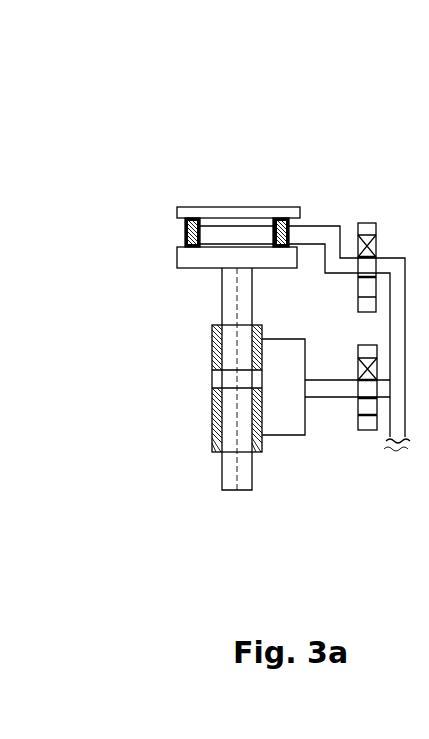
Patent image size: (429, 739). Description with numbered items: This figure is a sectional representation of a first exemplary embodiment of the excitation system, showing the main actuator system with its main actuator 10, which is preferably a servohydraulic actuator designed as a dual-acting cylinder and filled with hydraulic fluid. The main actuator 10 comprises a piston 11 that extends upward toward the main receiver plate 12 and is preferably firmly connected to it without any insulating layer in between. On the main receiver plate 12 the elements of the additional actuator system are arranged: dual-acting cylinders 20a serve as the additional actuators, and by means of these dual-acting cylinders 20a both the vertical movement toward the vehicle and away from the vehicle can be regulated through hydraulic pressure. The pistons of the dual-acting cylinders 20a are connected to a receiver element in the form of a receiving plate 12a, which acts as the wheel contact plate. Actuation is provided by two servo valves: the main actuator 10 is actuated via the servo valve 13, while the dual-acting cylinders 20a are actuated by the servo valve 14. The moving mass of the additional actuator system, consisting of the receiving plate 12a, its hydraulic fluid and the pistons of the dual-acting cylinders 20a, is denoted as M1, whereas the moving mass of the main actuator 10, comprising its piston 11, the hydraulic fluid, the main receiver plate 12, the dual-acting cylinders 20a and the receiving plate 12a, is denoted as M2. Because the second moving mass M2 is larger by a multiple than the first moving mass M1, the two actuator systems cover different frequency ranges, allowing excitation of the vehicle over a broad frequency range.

The main actuator 10 is at (251, 396).
The piston 11 is at (222, 307).
The main receiver plate 12 is at (255, 272).
The receiving plate 12a is at (270, 208).
The servo valve 13 is at (370, 415).
The servo valve 14 is at (372, 234).
The dual-acting cylinders 20a is at (185, 232).
The first moving mass M1 is at (215, 207).
The second moving mass M2 is at (245, 405).